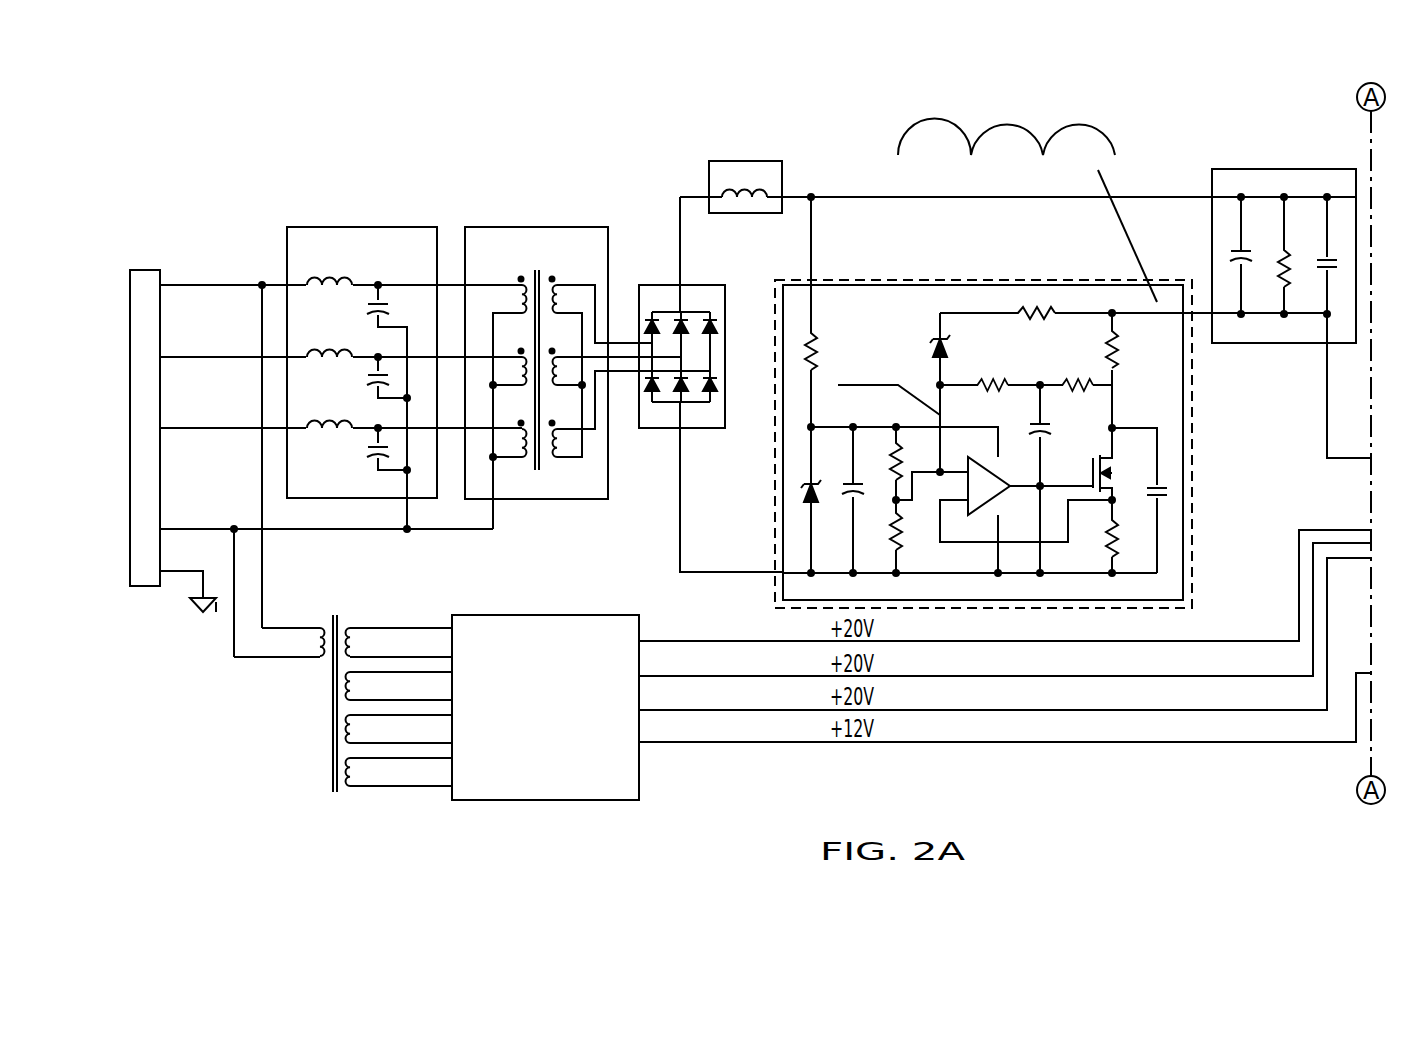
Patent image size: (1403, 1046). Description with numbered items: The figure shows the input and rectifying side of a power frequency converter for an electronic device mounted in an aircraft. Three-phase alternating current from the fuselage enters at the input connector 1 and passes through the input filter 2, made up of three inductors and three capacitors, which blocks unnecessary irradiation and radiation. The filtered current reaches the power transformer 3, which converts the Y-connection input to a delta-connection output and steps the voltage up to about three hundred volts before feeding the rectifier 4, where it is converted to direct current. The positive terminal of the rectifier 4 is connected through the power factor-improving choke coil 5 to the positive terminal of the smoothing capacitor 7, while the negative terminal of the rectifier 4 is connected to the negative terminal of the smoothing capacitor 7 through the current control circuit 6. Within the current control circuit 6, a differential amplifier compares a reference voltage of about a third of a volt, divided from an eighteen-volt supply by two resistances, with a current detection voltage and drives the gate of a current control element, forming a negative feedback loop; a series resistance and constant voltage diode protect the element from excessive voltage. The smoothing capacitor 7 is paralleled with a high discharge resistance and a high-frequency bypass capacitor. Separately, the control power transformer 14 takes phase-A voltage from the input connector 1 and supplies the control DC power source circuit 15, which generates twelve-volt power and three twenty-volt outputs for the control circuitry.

The input connector 1 is at (160, 285).
The input filter 2 is at (390, 253).
The power transformer 3 is at (592, 240).
The rectifier 4 is at (697, 430).
The power factor-improving choke coil 5 is at (777, 193).
The current control circuit 6 is at (1172, 562).
The smoothing capacitor 7 is at (1346, 213).
The control power transformer 14 is at (352, 628).
The control DC power source circuit 15 is at (547, 636).